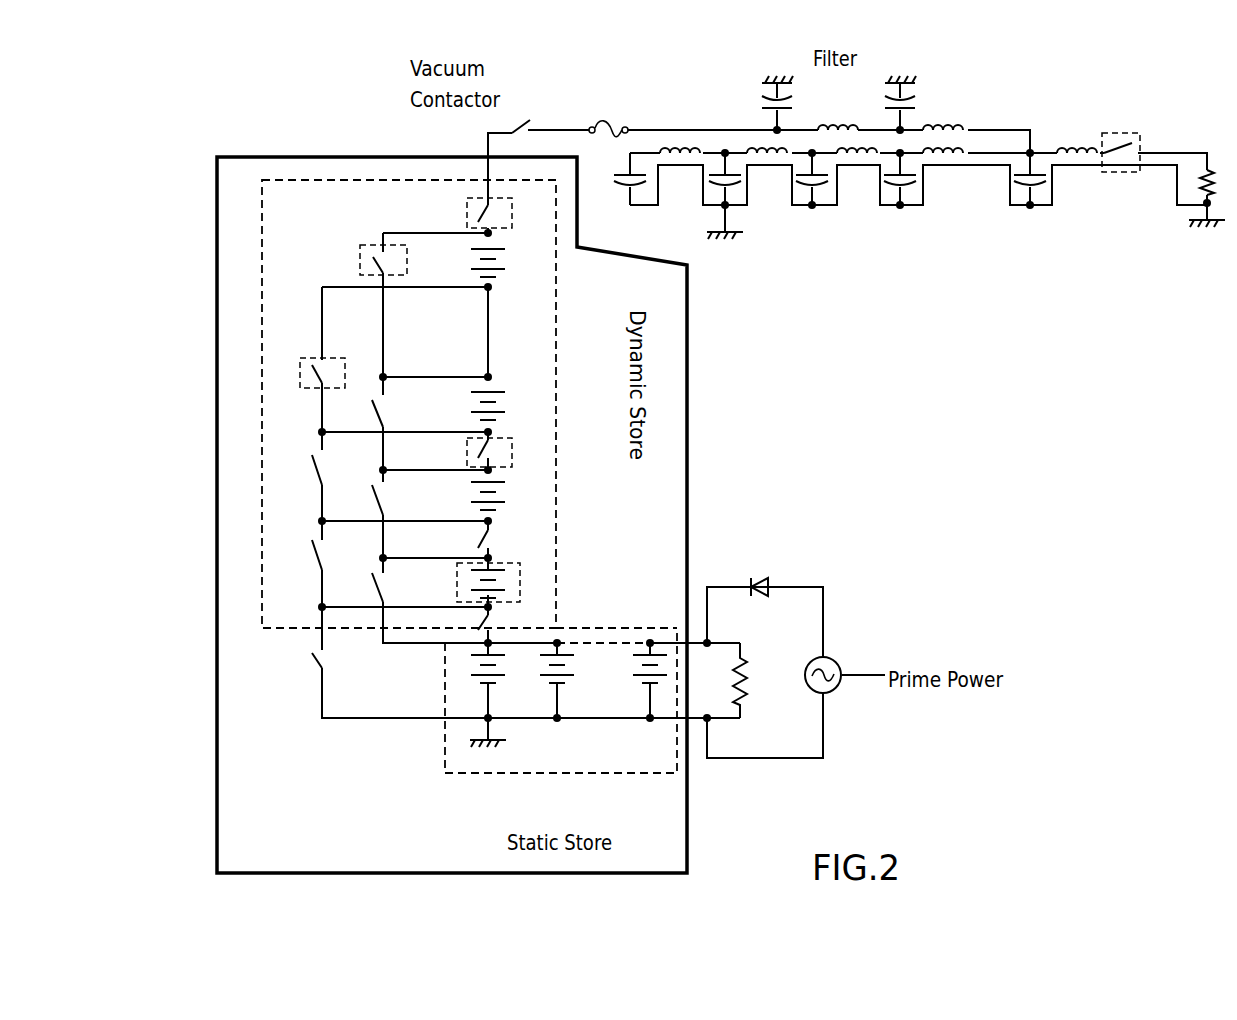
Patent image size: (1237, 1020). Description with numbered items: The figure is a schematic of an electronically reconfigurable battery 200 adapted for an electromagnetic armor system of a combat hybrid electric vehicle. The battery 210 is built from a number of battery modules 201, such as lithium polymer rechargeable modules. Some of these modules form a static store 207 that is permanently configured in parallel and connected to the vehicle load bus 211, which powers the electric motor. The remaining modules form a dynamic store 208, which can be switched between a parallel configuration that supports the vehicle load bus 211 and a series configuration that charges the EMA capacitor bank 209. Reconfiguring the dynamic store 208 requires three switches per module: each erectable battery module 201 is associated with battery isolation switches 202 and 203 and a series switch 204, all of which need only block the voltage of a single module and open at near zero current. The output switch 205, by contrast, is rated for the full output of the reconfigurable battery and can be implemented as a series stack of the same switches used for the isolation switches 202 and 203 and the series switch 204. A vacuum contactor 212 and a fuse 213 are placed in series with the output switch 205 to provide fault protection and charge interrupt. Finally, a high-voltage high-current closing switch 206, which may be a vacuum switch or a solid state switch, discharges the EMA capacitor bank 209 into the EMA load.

The electronically reconfigurable battery 200 is at (1133, 540).
The battery module 201 is at (520, 580).
The battery isolation switch 202 is at (360, 260).
The battery isolation switch 203 is at (302, 363).
The series switch 204 is at (512, 455).
The output switch 205 is at (505, 212).
The closing switch 206 is at (1125, 133).
The static store 207 is at (555, 773).
The dynamic store 208 is at (262, 335).
The EMA capacitor bank 209 is at (815, 207).
The battery 210 is at (675, 423).
The vehicle load bus 211 is at (765, 647).
The vacuum contactor 212 is at (523, 118).
The fuse 213 is at (613, 120).